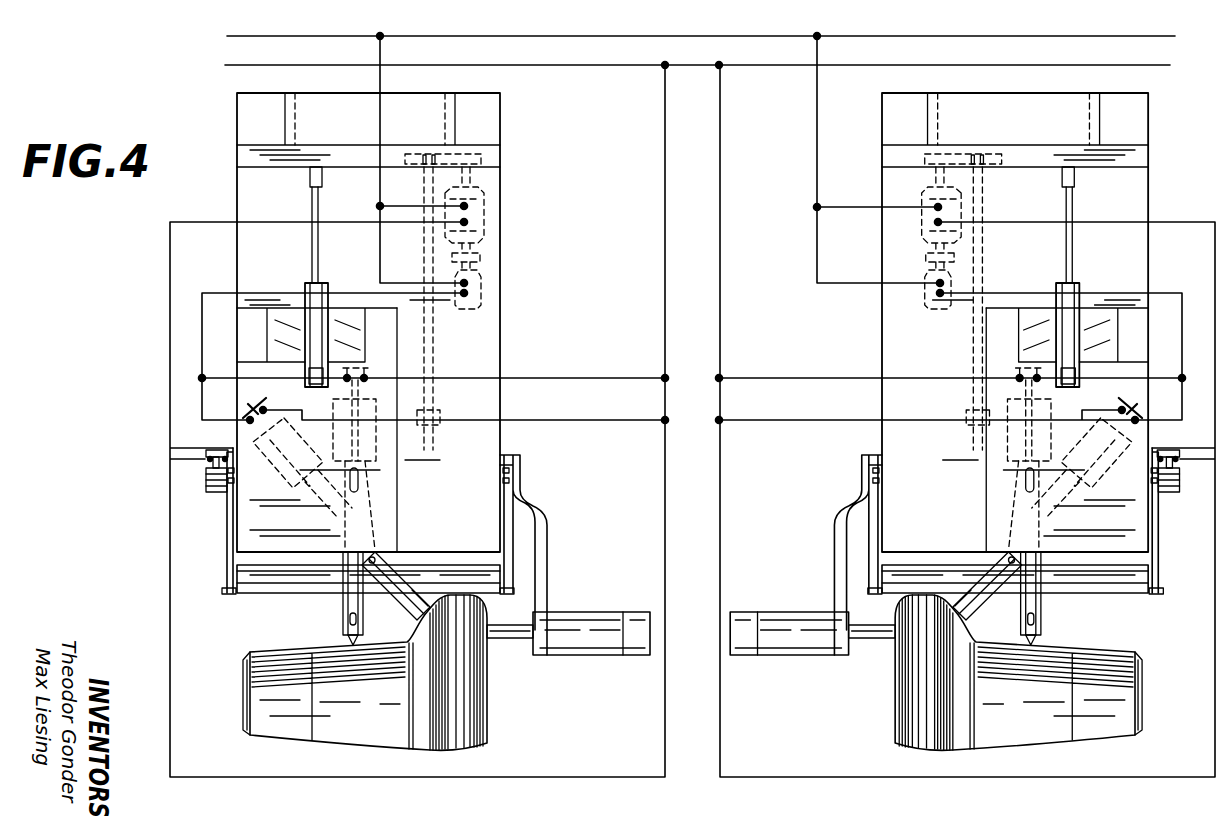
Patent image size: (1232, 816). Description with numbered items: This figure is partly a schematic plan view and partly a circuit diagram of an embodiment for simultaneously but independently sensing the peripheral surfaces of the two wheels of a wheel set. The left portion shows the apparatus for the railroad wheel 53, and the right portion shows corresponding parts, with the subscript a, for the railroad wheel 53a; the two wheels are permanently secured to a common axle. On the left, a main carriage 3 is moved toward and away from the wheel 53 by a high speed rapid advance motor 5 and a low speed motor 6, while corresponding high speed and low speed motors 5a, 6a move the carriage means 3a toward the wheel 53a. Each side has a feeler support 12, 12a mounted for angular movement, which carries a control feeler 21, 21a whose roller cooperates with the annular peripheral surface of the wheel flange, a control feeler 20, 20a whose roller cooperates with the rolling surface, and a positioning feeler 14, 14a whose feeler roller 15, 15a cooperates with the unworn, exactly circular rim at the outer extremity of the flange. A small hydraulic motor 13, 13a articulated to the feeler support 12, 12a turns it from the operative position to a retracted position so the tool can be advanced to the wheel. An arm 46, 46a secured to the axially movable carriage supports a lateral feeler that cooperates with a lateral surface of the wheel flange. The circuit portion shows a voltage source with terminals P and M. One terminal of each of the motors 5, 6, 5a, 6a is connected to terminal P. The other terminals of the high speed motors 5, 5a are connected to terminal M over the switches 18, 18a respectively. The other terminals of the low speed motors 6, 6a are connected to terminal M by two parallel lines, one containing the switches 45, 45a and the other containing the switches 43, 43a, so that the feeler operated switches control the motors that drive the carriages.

The terminal P is at (711, 37).
The terminal M is at (712, 65).
The main carriage 3 is at (240, 118).
The carriage means 3a is at (1147, 114).
The high speed rapid advance motor 5 is at (484, 200).
The high speed motor 5a is at (918, 191).
The low speed motor 6 is at (481, 290).
The low speed motor 6a is at (930, 283).
The feeler support 12 is at (388, 480).
The feeler support 12a is at (1000, 482).
The hydraulic motor 13 is at (313, 292).
The hydraulic motor 13a is at (1072, 292).
The positioning feeler 14 is at (226, 552).
The positioning feeler 14a is at (1156, 570).
The feeler roller 15 is at (250, 595).
The feeler roller 15a is at (1133, 595).
The switch 18 is at (210, 478).
The switch 18a is at (1174, 480).
The control feeler 20 is at (342, 614).
The control feeler 20a is at (1040, 614).
The control feeler 21 is at (407, 604).
The control feeler 21a is at (977, 604).
The switch 43 is at (256, 406).
The switch 43a is at (1129, 407).
The switch 45 is at (370, 366).
The switch 45a is at (1015, 370).
The arm 46 is at (586, 630).
The arm 46a is at (786, 628).
The railroad wheel 53 is at (472, 701).
The railroad wheel 53a is at (1130, 705).